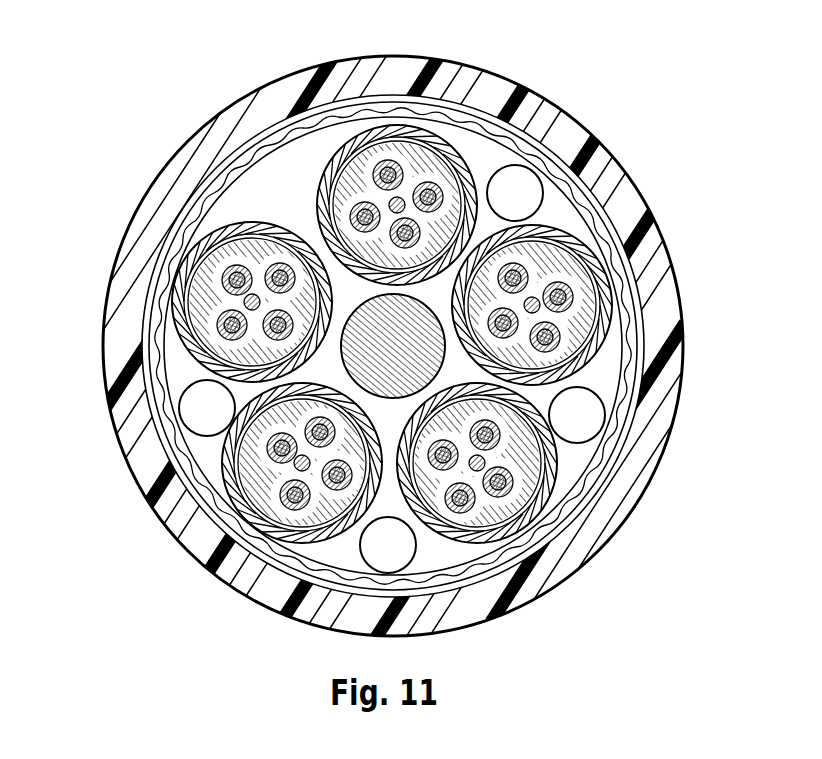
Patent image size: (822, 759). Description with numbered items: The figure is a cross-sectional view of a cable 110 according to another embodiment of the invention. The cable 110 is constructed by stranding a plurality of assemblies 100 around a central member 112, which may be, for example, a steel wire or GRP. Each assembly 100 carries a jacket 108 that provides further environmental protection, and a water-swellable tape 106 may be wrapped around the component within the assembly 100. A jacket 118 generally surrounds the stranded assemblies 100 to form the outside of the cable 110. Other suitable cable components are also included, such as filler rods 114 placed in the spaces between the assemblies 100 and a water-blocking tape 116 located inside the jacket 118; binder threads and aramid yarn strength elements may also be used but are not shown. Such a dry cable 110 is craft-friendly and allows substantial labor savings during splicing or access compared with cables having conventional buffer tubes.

The assembly 100 is at (326, 356).
The tape 106 is at (223, 485).
The jacket 108 is at (242, 488).
The cable 110 is at (396, 343).
The central member 112 is at (390, 360).
The filler rods 114 is at (583, 407).
The water-blocking tape 116 is at (583, 490).
The jacket 118 is at (667, 391).